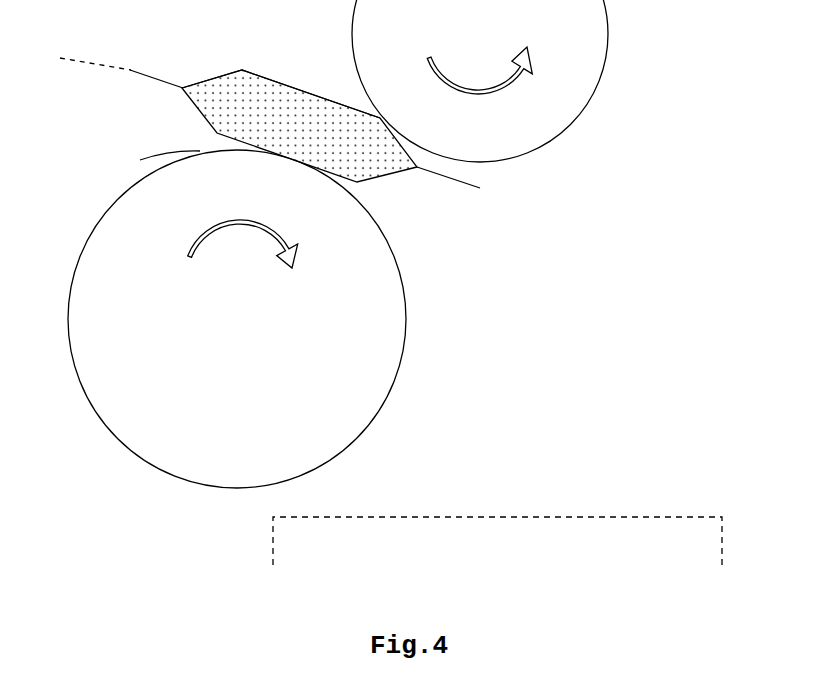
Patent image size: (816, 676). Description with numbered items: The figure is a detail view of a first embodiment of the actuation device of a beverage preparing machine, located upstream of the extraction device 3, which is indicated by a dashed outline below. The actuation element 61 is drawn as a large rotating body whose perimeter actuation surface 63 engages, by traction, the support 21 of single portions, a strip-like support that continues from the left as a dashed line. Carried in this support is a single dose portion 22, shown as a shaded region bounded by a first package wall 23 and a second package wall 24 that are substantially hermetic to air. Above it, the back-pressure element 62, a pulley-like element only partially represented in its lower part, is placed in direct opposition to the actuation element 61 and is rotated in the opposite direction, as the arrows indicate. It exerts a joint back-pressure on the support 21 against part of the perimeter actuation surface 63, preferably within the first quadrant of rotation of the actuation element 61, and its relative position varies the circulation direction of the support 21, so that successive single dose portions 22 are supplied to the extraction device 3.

The extraction device 3 is at (497, 541).
The support of single portions 21 is at (95, 57).
The single dose portion 22 is at (305, 123).
The first package wall 23 is at (288, 126).
The second package wall 24 is at (281, 88).
The actuation element 61 is at (237, 319).
The back-pressure element 62 is at (480, 81).
The perimeter actuation surface 63 is at (156, 167).